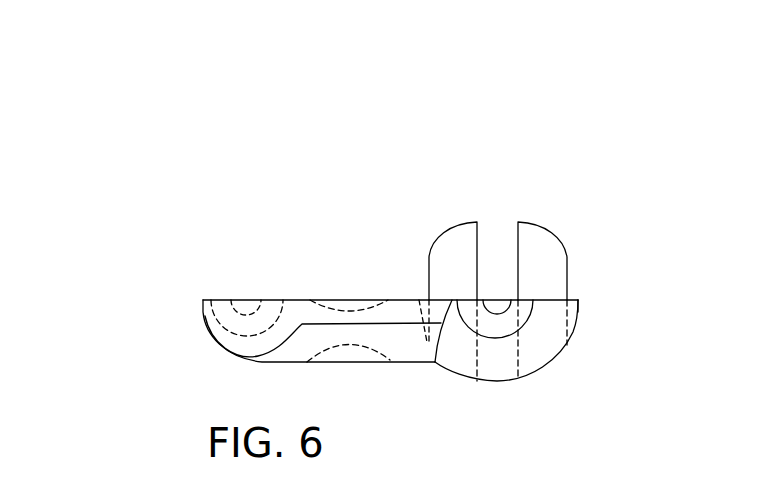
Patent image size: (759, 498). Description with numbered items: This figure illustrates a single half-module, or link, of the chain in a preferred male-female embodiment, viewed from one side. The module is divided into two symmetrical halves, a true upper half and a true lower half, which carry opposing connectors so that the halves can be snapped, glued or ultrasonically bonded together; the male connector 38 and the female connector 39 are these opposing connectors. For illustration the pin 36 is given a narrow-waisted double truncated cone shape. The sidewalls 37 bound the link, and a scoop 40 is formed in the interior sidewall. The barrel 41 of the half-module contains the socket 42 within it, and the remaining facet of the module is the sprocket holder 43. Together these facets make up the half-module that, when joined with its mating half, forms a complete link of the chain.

The pin 36 is at (226, 303).
The sidewalls 37 is at (291, 305).
The male connector 38 is at (569, 270).
The female connector 39 is at (571, 324).
The scoop 40 is at (343, 307).
The barrel 41 is at (516, 380).
The socket 42 is at (497, 309).
The sprocket holder 43 is at (394, 302).